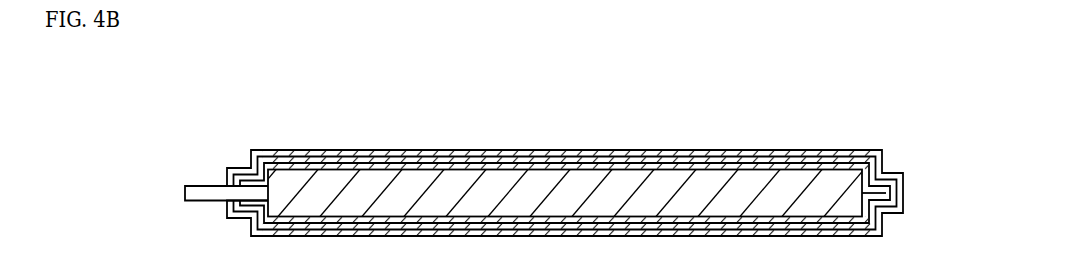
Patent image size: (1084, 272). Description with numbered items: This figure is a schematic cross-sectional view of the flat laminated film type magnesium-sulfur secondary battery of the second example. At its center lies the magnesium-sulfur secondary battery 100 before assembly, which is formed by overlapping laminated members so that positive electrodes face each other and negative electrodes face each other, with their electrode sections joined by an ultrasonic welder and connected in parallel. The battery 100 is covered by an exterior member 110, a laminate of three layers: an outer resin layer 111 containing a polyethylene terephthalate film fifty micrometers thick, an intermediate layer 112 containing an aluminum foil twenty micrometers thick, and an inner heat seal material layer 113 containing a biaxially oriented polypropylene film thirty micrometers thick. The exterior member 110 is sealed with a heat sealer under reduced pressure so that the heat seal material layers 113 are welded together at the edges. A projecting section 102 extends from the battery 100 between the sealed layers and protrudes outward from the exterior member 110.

The magnesium-sulfur secondary battery 100 is at (340, 195).
The projecting section 102 is at (195, 194).
The exterior member 110 is at (565, 158).
The resin layer 111 is at (588, 150).
The intermediate layer 112 is at (695, 158).
The heat seal material layer 113 is at (807, 170).